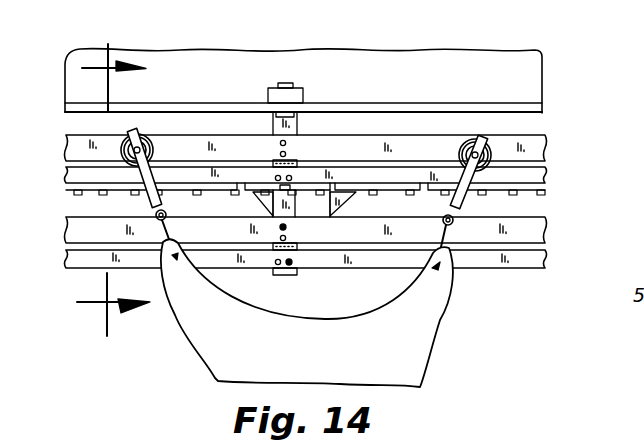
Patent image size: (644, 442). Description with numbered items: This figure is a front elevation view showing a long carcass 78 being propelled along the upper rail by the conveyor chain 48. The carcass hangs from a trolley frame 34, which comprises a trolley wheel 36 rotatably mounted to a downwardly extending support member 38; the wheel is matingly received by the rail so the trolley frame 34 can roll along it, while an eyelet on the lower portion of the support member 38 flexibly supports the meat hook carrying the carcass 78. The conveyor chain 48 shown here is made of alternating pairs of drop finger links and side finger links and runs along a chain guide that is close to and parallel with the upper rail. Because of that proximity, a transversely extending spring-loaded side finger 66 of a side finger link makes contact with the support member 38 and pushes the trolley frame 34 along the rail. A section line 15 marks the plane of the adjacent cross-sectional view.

The section line 15- 15 is at (100, 183).
The trolley frame 34 is at (147, 130).
The trolley wheel 36 is at (120, 142).
The support member 38 is at (152, 198).
The conveyor chain 48 is at (552, 187).
The side finger 66 is at (172, 192).
The long carcass 78 is at (418, 347).